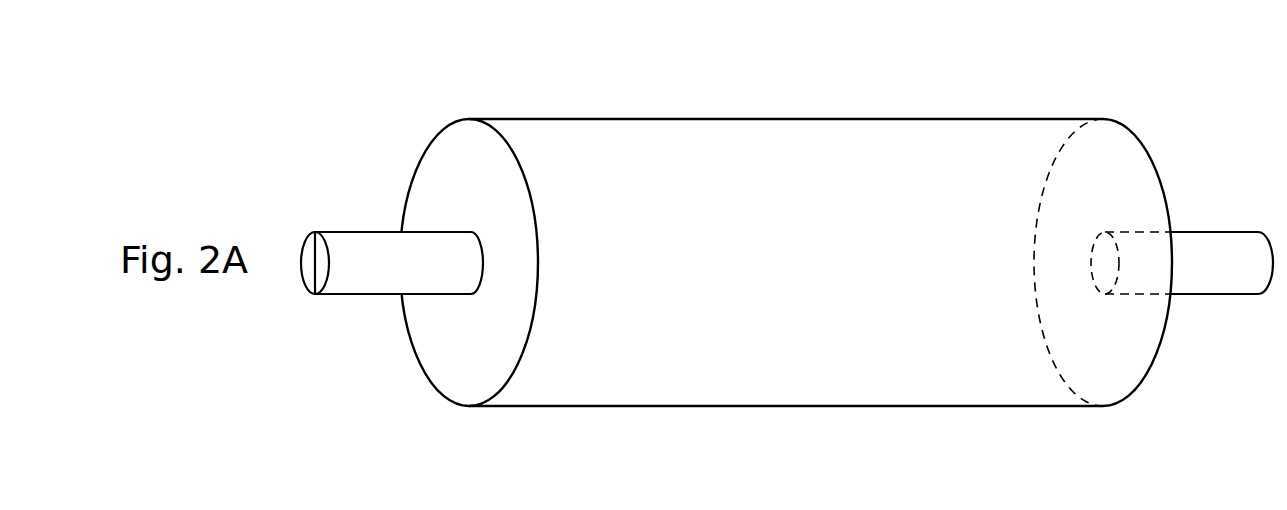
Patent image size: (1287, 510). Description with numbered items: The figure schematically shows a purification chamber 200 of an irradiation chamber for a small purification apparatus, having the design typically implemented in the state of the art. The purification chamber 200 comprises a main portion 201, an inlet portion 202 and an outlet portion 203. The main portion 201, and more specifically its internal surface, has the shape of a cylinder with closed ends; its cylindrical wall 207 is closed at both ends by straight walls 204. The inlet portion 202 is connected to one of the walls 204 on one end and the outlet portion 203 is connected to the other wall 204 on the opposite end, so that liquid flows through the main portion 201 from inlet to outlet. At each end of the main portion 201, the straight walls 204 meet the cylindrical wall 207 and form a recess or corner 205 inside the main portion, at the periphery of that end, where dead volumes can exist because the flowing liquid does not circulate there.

The purification chamber 200 is at (657, 90).
The main portion 201 is at (800, 388).
The inlet portion 202 is at (356, 242).
The outlet portion 203 is at (1213, 288).
The straight wall 204 is at (448, 139).
The recess or corner 205 is at (497, 122).
The cylindrical wall 207 is at (945, 132).